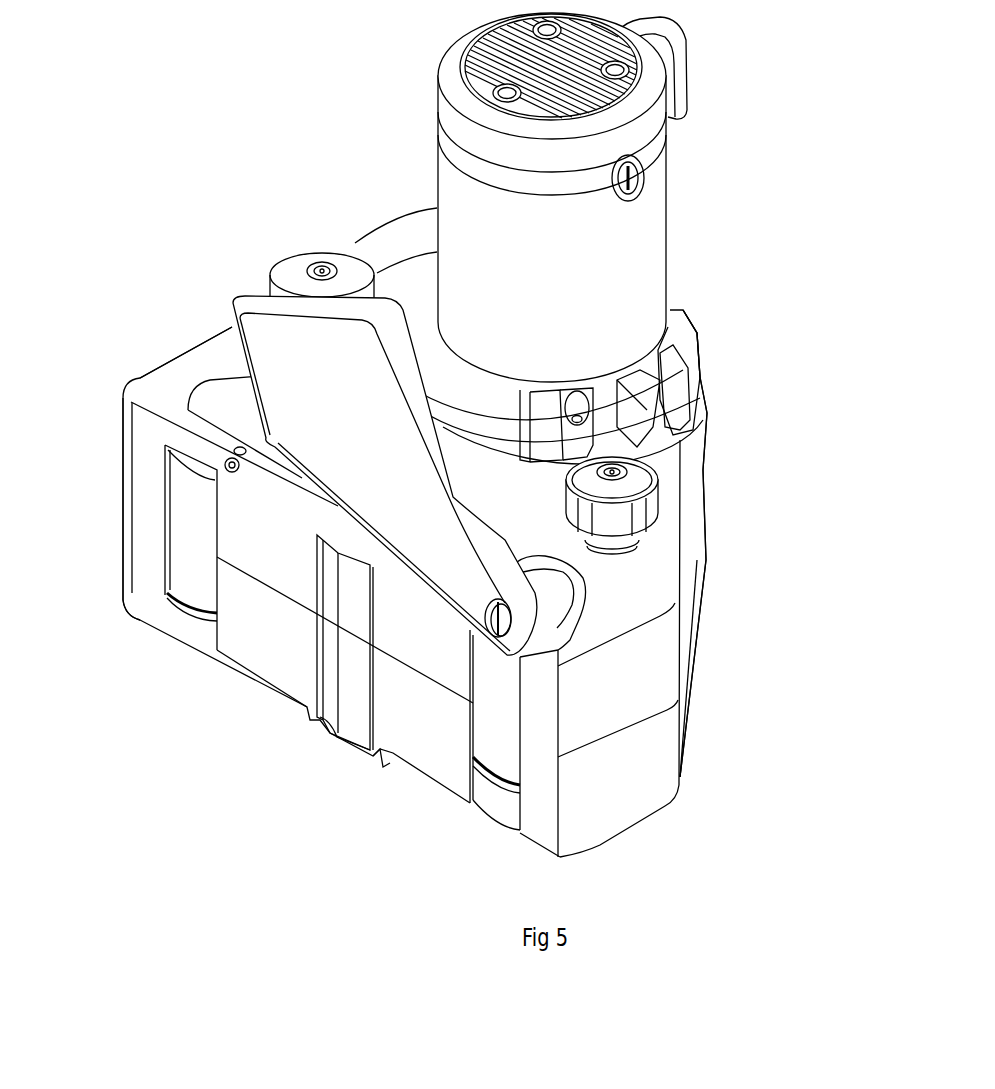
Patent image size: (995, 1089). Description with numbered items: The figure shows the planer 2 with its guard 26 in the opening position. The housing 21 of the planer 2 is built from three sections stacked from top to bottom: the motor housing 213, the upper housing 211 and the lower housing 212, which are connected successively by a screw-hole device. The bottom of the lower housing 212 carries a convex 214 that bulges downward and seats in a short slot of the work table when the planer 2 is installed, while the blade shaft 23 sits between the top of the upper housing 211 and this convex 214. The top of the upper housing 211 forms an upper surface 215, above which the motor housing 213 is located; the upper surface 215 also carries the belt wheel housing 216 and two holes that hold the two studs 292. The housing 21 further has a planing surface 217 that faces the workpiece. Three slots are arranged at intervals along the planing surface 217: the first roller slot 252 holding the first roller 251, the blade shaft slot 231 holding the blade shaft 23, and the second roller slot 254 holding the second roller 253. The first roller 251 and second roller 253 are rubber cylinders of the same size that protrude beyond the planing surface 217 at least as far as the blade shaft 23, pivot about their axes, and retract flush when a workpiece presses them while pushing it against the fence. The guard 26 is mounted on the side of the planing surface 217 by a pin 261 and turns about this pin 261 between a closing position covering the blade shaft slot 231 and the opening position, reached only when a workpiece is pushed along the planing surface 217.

The planer 2 is at (768, 320).
The housing 21 is at (672, 688).
The upper housing 211 is at (137, 443).
The lower housing 212 is at (143, 577).
The motor housing 213 is at (638, 220).
The convex 214 is at (385, 760).
The upper surface 215 is at (165, 392).
The belt wheel housing 216 is at (627, 553).
The planing surface 217 is at (258, 578).
The blade shaft 23 is at (350, 730).
The blade shaft slot 231 is at (360, 747).
The first roller 251 is at (195, 530).
The first roller slot 252 is at (217, 613).
The second roller 253 is at (500, 720).
The second roller slot 254 is at (473, 757).
The guard 26 is at (250, 337).
The pin 261 is at (515, 645).
The studs 292 is at (587, 477).